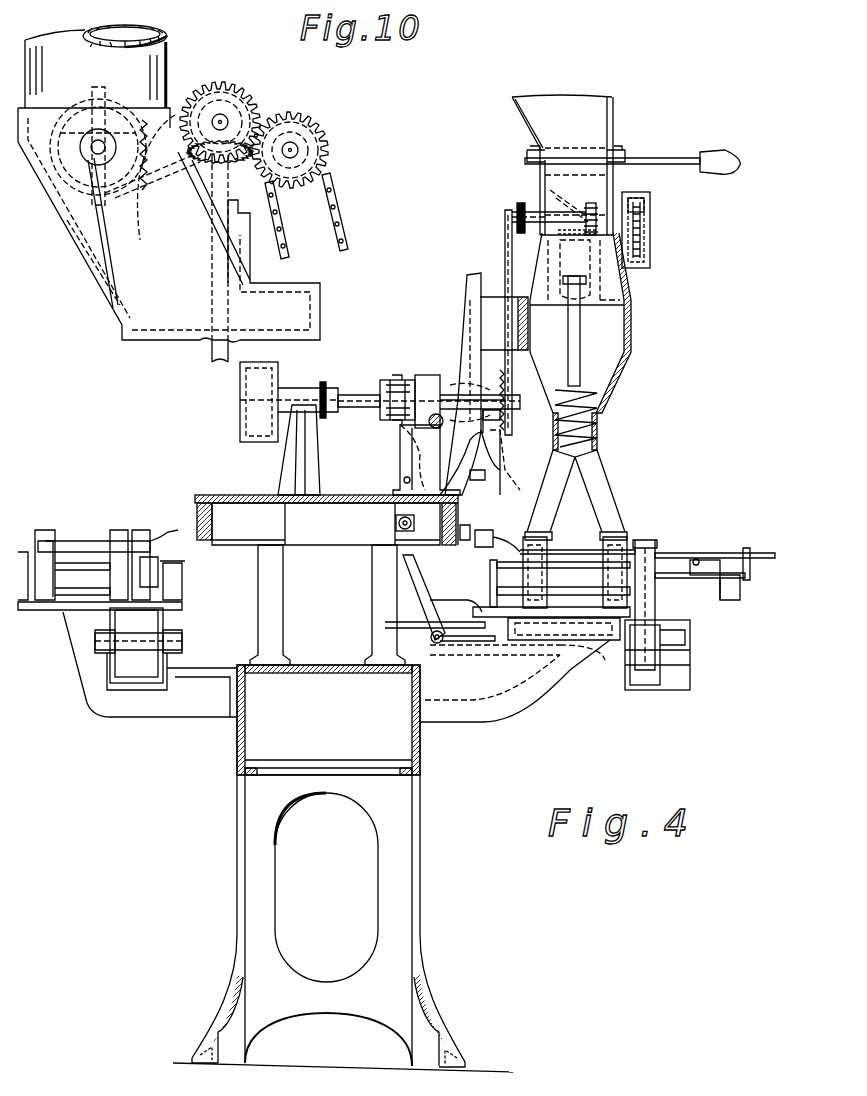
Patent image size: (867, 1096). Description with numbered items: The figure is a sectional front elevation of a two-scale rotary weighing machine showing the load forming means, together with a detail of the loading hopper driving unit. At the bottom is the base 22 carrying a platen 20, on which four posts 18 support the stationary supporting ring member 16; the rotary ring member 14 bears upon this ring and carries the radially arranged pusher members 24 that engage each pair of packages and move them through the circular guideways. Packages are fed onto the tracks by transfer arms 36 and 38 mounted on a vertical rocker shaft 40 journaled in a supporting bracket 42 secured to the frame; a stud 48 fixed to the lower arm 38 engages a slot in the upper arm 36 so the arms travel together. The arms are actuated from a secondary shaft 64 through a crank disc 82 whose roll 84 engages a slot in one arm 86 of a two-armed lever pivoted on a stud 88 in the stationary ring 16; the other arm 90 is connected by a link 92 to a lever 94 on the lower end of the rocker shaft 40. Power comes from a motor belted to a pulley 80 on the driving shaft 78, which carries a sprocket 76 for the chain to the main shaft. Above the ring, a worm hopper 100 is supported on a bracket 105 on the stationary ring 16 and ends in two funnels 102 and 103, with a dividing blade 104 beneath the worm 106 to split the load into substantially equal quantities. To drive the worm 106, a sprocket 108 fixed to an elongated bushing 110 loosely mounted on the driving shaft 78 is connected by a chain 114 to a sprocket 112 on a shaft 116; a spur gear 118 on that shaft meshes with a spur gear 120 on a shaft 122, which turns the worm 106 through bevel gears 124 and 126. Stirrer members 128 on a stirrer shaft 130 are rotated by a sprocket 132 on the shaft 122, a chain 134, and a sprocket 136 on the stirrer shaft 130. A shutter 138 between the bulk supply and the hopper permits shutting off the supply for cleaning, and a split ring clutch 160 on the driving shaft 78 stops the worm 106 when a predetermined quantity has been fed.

In FIG. 4, the rotary ring member 14 is at (197, 500).
In FIG. 4, the stationary supporting ring member 16 is at (225, 548).
In FIG. 4, the posts 18 is at (258, 604).
In FIG. 4, the platen 20 is at (236, 752).
In FIG. 4, the base 22 is at (237, 902).
In FIG. 4, the pusher members 24 is at (88, 540).
In FIG. 4, the upper transfer arm 36 is at (742, 552).
In FIG. 4, the lower transfer arm 38 is at (733, 577).
In FIG. 4, the rocker shaft 40 is at (650, 540).
In FIG. 4, the supporting bracket 42 is at (517, 703).
In FIG. 4, the stud 48 is at (750, 580).
In FIG. 4, the secondary shaft 64 is at (432, 388).
In FIG. 4, the sprocket 76 is at (322, 383).
In FIG. 4, the driving shaft 78 is at (356, 395).
In FIG. 4, the pulley 80 is at (240, 432).
In FIG. 4, the crank disc 82 is at (472, 392).
In FIG. 4, the roll 84 is at (422, 432).
In FIG. 4, the arm of two-armed lever 86 is at (405, 460).
In FIG. 4, the stud 88 is at (396, 524).
In FIG. 4, the other arm of two-armed lever 90 is at (415, 592).
In FIG. 4, the link 92 is at (477, 640).
In FIG. 4, the lever 94 is at (680, 665).
In FIG. 10, the worm hopper 100 is at (320, 294).
In FIG. 4, the worm hopper 100 is at (631, 331).
In FIG. 4, the funnel 102 is at (538, 505).
In FIG. 4, the funnel 103 is at (606, 490).
In FIG. 4, the dividing blade 104 is at (585, 456).
In FIG. 4, the bracket 105 is at (467, 282).
In FIG. 10, the worm 106 is at (212, 352).
In FIG. 4, the worm 106 is at (600, 392).
In FIG. 4, the sprocket 108 is at (498, 430).
In FIG. 4, the elongated bushing 110 is at (500, 458).
In FIG. 10, the sprocket 112 is at (322, 172).
In FIG. 4, the sprocket 112 is at (516, 210).
In FIG. 10, the chain 114 is at (344, 222).
In FIG. 4, the chain 114 is at (505, 250).
In FIG. 10, the shaft 116 is at (292, 150).
In FIG. 10, the spur gear 118 is at (318, 118).
In FIG. 4, the spur gear 118 is at (640, 262).
In FIG. 10, the spur gear 120 is at (245, 100).
In FIG. 4, the spur gear 120 is at (651, 203).
In FIG. 10, the shaft 122 is at (222, 122).
In FIG. 10, the bevel gear 124 is at (240, 102).
In FIG. 4, the bevel gear 124 is at (586, 207).
In FIG. 10, the bevel gear 126 is at (198, 163).
In FIG. 4, the bevel gear 126 is at (588, 215).
In FIG. 10, the stirrer members 128 is at (80, 222).
In FIG. 10, the stirrer shaft 130 is at (88, 157).
In FIG. 10, the sprocket 132 is at (190, 95).
In FIG. 10, the chain 134 is at (160, 243).
In FIG. 10, the sprocket 136 is at (133, 88).
In FIG. 4, the shutter 138 is at (662, 158).
In FIG. 4, the split ring clutch 160 is at (400, 385).